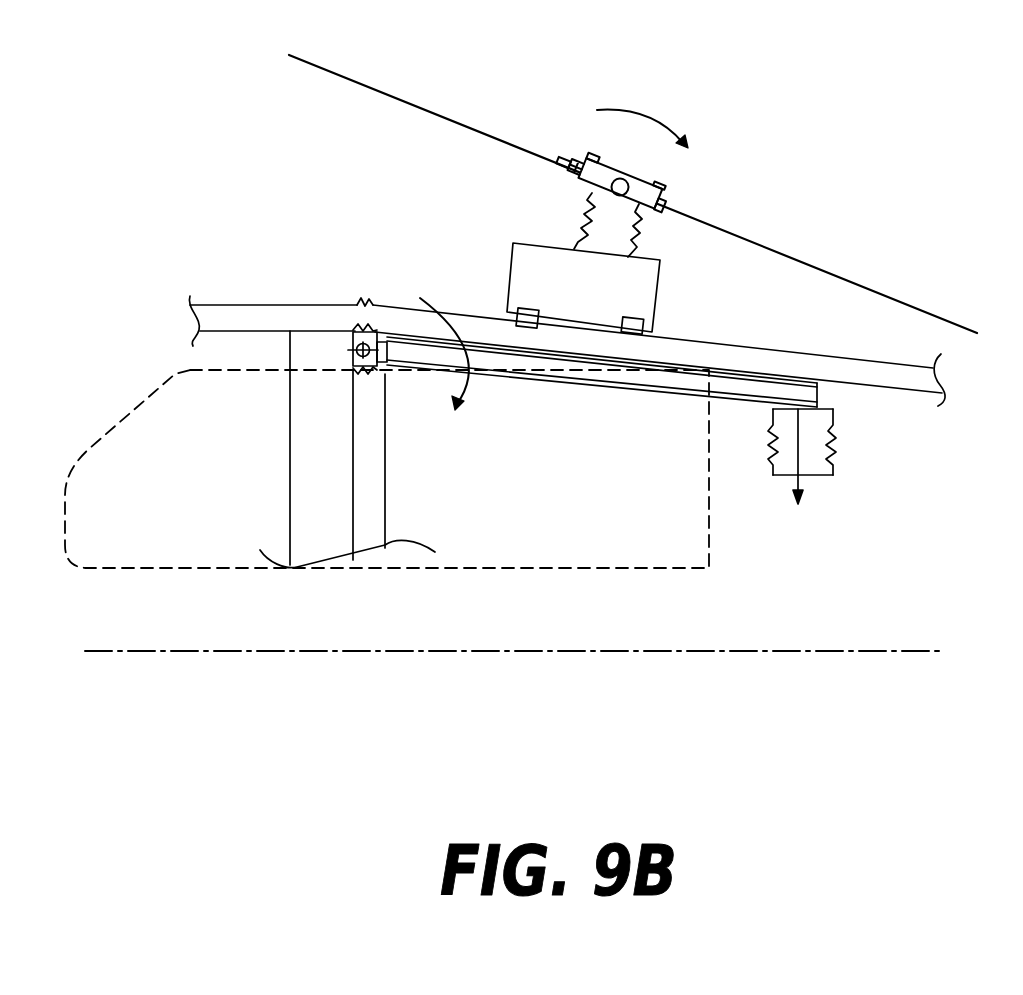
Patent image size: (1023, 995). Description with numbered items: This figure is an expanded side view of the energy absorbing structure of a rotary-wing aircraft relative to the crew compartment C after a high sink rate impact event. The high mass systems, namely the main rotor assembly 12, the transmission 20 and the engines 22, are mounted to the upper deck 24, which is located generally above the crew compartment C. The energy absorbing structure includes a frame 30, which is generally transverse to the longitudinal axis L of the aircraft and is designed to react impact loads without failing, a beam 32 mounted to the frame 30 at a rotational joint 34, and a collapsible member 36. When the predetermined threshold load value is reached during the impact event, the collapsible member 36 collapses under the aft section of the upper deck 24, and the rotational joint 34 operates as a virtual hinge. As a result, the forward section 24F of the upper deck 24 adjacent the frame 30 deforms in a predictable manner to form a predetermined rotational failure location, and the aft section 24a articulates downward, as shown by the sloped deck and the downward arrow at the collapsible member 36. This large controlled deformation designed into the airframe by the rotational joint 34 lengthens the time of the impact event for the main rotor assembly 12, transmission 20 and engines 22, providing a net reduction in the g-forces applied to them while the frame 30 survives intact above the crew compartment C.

The main rotor assembly 12 is at (557, 160).
The transmission 20 is at (650, 288).
The engines 22 is at (630, 307).
The upper deck 24 is at (589, 354).
The forward section of the upper deck 24F is at (370, 306).
The aft section of the upper deck 24a is at (917, 395).
The rotational joint 34 is at (355, 330).
The beam 32 is at (628, 379).
The collapsible member 36 is at (835, 455).
The frame 30 is at (300, 412).
The crew compartment C is at (193, 507).
The longitudinal axis L is at (491, 652).